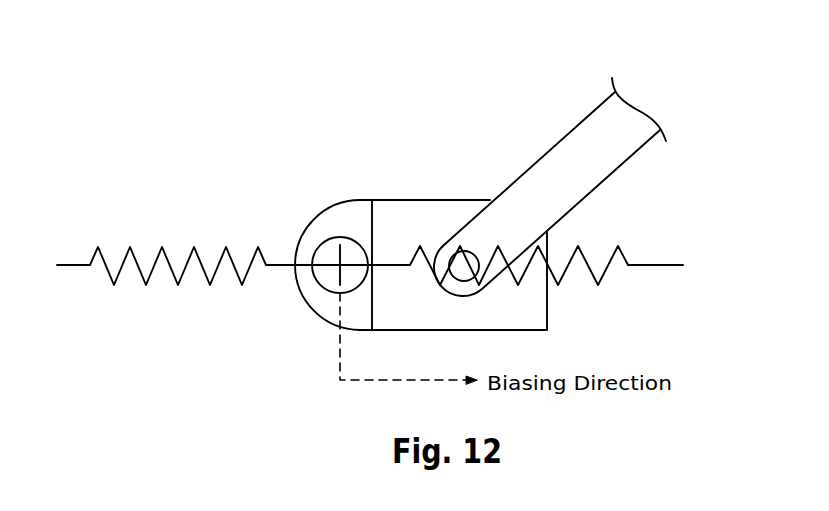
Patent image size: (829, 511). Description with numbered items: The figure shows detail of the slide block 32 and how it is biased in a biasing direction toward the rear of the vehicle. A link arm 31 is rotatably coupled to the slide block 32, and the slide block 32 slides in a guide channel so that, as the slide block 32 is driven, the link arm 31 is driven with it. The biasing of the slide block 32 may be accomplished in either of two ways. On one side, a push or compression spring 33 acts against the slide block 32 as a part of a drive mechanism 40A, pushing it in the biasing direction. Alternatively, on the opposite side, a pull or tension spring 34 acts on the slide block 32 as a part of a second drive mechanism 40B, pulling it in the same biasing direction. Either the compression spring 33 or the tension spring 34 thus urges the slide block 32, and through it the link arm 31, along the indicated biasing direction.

The link arm 31 is at (592, 128).
The slide block 32 is at (380, 200).
The push or compression spring 33 is at (197, 249).
The pull or tension spring 34 is at (602, 280).
The drive mechanism 40A is at (155, 210).
The second drive mechanism 40B is at (590, 235).